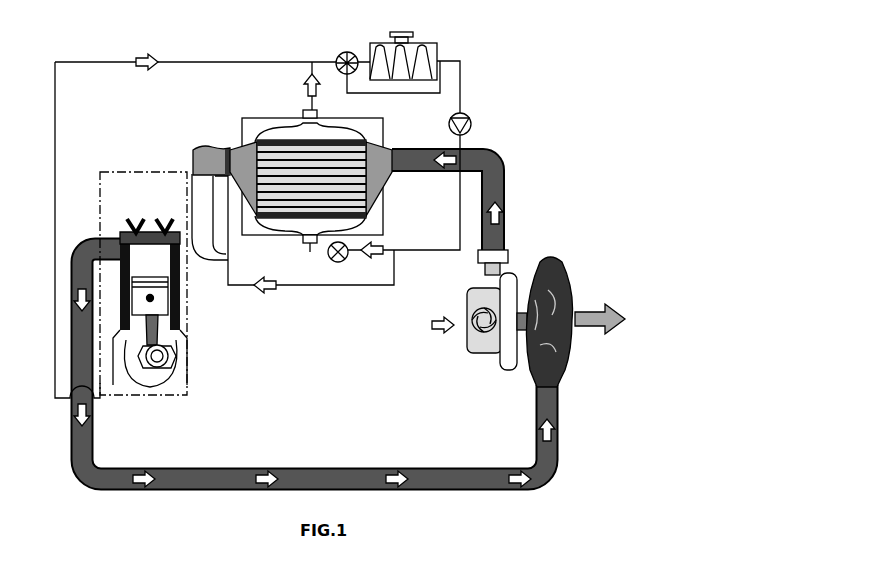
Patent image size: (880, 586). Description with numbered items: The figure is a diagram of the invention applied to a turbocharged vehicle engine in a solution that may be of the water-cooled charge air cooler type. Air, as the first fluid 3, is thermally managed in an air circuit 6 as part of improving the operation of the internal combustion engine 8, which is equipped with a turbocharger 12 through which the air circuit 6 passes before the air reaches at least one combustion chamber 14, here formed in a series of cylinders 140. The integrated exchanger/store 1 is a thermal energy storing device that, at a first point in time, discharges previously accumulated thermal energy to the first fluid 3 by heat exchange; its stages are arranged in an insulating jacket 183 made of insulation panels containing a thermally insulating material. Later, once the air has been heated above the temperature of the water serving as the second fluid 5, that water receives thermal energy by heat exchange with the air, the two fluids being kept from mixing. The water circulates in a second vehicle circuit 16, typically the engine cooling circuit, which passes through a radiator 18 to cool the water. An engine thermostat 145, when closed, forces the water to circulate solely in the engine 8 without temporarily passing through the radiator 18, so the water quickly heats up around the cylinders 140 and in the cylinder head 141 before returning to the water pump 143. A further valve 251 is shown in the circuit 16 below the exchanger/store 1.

The integrated exchanger/store 1 is at (279, 240).
The first fluid 3 is at (463, 476).
The second fluid 5 is at (325, 62).
The air circuit 6 is at (208, 146).
The internal combustion engine 8 is at (565, 251).
The turbocharger 12 is at (522, 364).
The combustion chamber 14 is at (160, 230).
The second vehicle circuit 16 is at (49, 169).
The radiator 18 is at (427, 53).
The cylinders 140 is at (122, 233).
The cylinder head 141 is at (135, 383).
The water pump 143 is at (472, 123).
The engine thermostat 145 is at (347, 51).
The insulating jacket 183 is at (241, 118).
The valve 251 is at (336, 258).